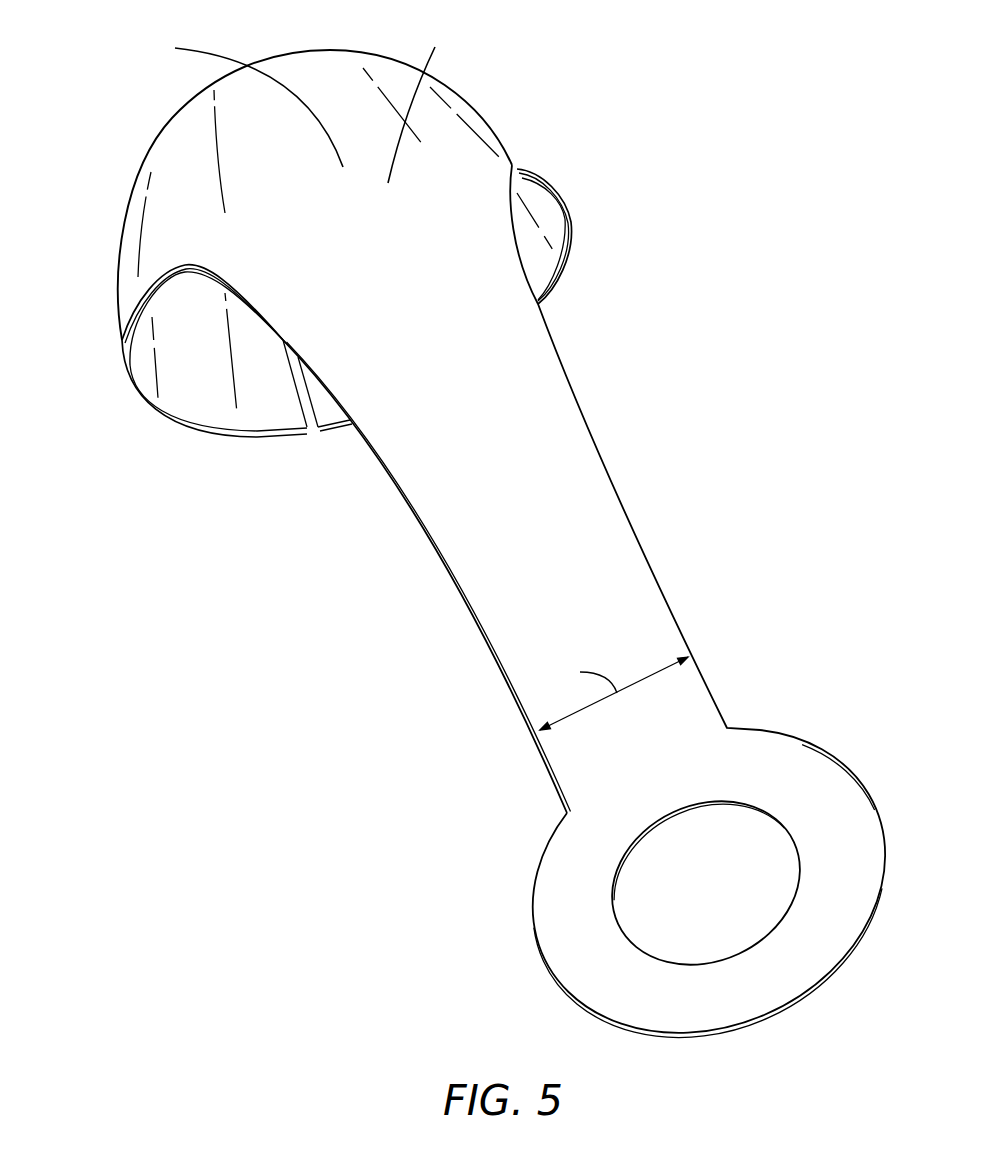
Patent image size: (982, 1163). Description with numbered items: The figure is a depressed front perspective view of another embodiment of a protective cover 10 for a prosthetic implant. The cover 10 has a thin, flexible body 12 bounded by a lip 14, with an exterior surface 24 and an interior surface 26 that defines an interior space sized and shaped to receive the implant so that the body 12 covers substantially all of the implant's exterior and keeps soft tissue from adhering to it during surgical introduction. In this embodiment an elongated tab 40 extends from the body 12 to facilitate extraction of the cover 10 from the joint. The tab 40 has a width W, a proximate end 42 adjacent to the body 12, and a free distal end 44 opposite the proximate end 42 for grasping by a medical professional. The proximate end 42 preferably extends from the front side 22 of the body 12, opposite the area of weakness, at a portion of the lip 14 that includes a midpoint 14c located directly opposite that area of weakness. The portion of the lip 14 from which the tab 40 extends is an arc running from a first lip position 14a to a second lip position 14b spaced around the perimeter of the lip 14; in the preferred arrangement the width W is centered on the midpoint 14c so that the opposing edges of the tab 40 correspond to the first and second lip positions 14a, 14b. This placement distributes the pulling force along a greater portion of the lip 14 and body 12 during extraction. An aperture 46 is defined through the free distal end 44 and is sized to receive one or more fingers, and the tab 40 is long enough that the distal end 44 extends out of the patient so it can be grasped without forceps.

The protective cover 10 is at (517, 50).
The body 12 is at (172, 118).
The lip 14 is at (275, 436).
The first lip position 14a is at (163, 263).
The second lip position 14b is at (518, 165).
The midpoint of the lip 14c is at (419, 100).
The front side 22 is at (247, 100).
The exterior surface 24 is at (190, 203).
The interior surface 26 is at (211, 372).
The elongated tab 40 is at (553, 498).
The proximate end 42 is at (394, 272).
The free distal end 44 is at (758, 730).
The aperture 46 is at (777, 817).